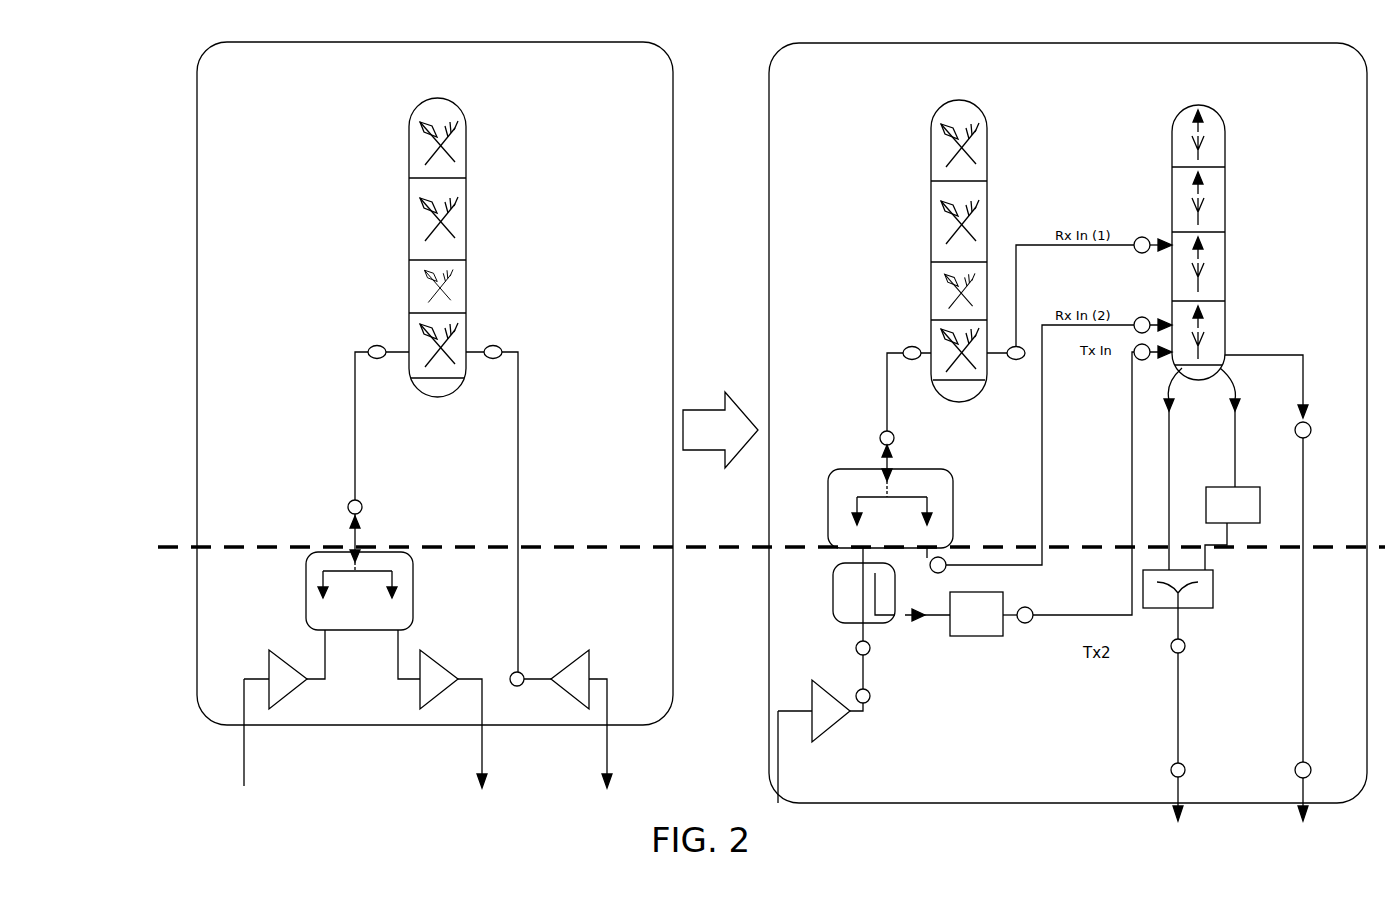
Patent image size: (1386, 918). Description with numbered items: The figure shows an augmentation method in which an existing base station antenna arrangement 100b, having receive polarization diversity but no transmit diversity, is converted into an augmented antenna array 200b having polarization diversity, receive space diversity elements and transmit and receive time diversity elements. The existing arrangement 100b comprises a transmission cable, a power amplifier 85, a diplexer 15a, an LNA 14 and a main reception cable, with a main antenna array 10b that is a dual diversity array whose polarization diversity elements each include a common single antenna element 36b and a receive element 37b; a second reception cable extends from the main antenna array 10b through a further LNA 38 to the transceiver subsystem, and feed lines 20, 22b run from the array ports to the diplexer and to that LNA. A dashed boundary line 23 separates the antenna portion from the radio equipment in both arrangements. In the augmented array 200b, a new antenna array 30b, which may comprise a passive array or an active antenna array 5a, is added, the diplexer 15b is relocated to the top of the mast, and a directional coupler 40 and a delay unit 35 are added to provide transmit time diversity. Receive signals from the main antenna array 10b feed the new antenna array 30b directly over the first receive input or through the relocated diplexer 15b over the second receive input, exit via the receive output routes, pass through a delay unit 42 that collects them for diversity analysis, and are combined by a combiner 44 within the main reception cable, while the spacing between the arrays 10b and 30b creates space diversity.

The existing base station antenna arrangement 100b is at (407, 42).
The augmented antenna array 200b is at (902, 43).
The main antenna array 10b is at (480, 254).
The common single antenna element 36b is at (409, 133).
The receive element 37b is at (455, 130).
The transmit/receive feed line 20 is at (346, 445).
The second receive feed line 22b is at (540, 448).
The diplexer 15a is at (409, 581).
The power amplifier 85 is at (300, 685).
The LNA 14 is at (416, 692).
The second low noise amplifier 38 is at (594, 656).
The boundary line between antenna and radio units 23 is at (158, 547).
The new antenna array 30b is at (1228, 156).
The active antenna array 5a is at (1222, 203).
The diplexer 15b is at (827, 493).
The directional coupler 40 is at (832, 594).
The delay unit 35 is at (978, 638).
The delay unit 42 is at (1260, 497).
The combiner 44 is at (1218, 590).